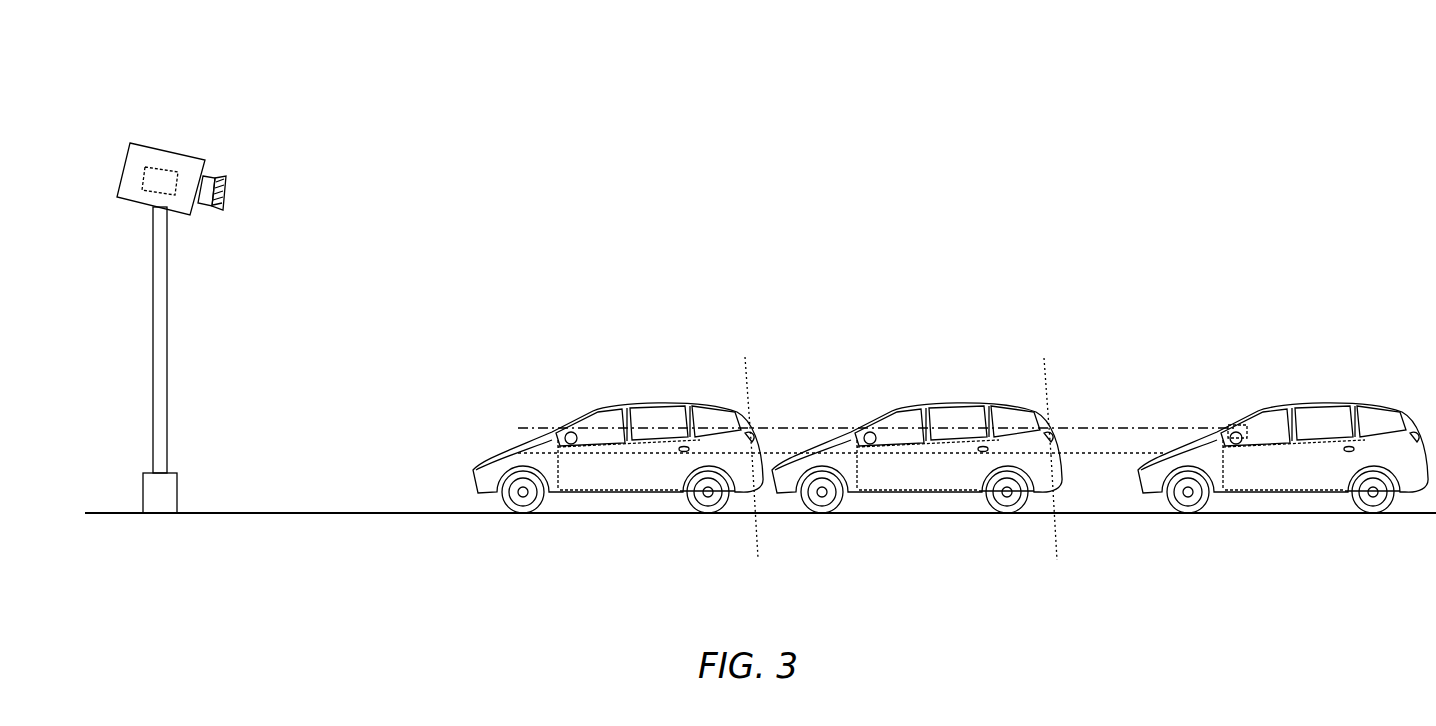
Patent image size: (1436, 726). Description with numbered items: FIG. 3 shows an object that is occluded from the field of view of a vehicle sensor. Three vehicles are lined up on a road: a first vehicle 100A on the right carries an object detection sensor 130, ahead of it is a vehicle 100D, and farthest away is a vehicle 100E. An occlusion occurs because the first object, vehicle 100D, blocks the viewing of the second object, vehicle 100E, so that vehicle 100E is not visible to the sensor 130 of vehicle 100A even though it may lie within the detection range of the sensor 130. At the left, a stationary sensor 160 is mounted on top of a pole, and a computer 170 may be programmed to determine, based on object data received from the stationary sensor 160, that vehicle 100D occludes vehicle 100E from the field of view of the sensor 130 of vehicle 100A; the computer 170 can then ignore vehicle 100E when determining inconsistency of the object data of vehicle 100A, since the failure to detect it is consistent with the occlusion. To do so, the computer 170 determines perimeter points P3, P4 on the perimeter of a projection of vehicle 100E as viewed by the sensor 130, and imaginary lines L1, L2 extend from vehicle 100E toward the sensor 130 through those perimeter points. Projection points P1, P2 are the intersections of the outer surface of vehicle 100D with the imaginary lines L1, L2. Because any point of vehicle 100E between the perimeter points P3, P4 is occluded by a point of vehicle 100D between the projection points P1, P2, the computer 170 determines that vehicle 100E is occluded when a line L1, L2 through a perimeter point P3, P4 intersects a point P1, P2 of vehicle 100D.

The stationary sensor 160 is at (186, 156).
The computer 170 is at (148, 196).
The object detection sensor 130 is at (1243, 425).
The vehicle 100E is at (618, 458).
The vehicle 100D is at (917, 458).
The vehicle 100A is at (1283, 458).
The projection point P1 is at (1048, 394).
The projection point P2 is at (1057, 520).
The perimeter point P3 is at (750, 394).
The perimeter point P4 is at (757, 520).
The imaginary line L1 is at (1133, 428).
The imaginary line L2 is at (1128, 455).